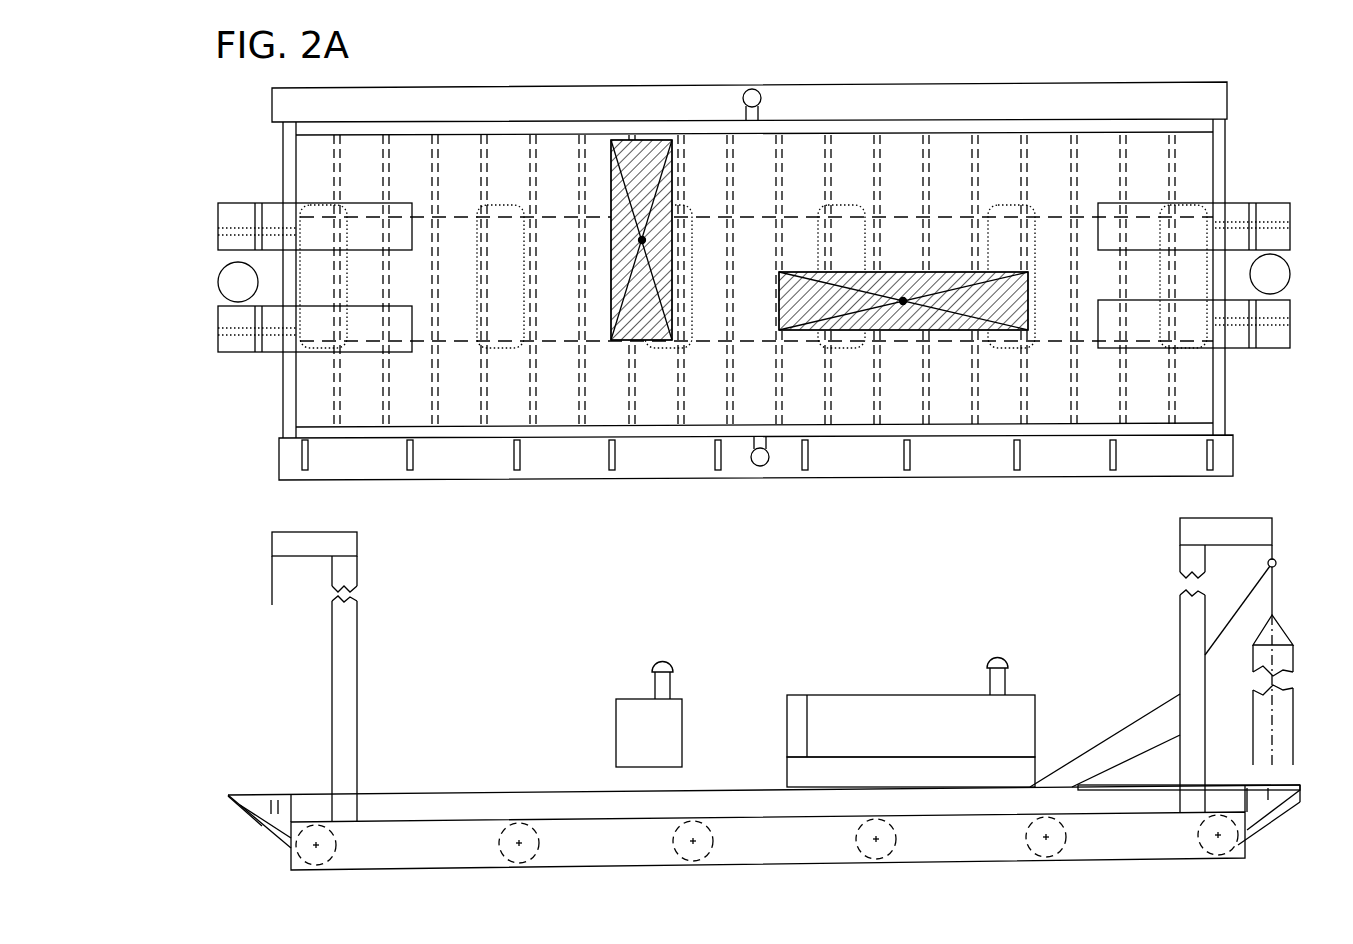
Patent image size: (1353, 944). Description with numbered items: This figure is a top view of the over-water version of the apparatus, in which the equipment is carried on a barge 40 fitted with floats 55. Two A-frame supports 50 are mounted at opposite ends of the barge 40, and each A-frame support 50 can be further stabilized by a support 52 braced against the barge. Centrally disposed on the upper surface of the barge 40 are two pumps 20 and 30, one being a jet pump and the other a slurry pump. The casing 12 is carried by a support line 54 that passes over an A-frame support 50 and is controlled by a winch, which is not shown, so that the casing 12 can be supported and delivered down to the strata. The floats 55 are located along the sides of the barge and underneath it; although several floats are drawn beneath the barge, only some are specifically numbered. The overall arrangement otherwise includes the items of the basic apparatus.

The casing 12 is at (220, 284).
The pump 20 is at (615, 725).
The pump 30 is at (892, 693).
The barge 40 is at (390, 793).
The A-frame support 50 is at (358, 657).
The support 52 is at (1128, 727).
The support line 54 is at (1272, 595).
The float 55 is at (540, 210).